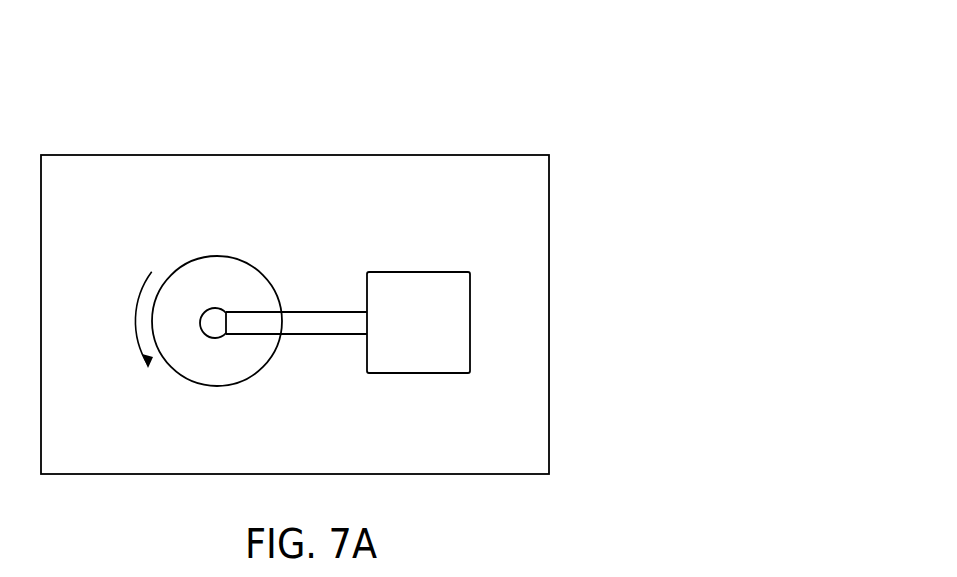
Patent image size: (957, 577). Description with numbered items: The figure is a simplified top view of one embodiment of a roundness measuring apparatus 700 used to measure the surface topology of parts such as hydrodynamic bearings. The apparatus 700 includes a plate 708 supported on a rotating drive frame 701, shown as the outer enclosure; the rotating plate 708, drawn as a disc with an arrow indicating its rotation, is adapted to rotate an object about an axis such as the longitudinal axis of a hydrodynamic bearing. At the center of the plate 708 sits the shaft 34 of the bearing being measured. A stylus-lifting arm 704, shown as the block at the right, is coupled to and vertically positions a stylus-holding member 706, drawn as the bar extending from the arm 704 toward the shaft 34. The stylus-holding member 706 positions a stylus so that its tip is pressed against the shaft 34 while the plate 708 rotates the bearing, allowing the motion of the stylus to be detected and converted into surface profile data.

The roundness measuring apparatus 700 is at (524, 77).
The rotating drive frame 701 is at (550, 292).
The plate 708 is at (200, 385).
The shaft 34 is at (210, 306).
The stylus-holding member 706 is at (318, 312).
The stylus-lifting arm 704 is at (423, 272).